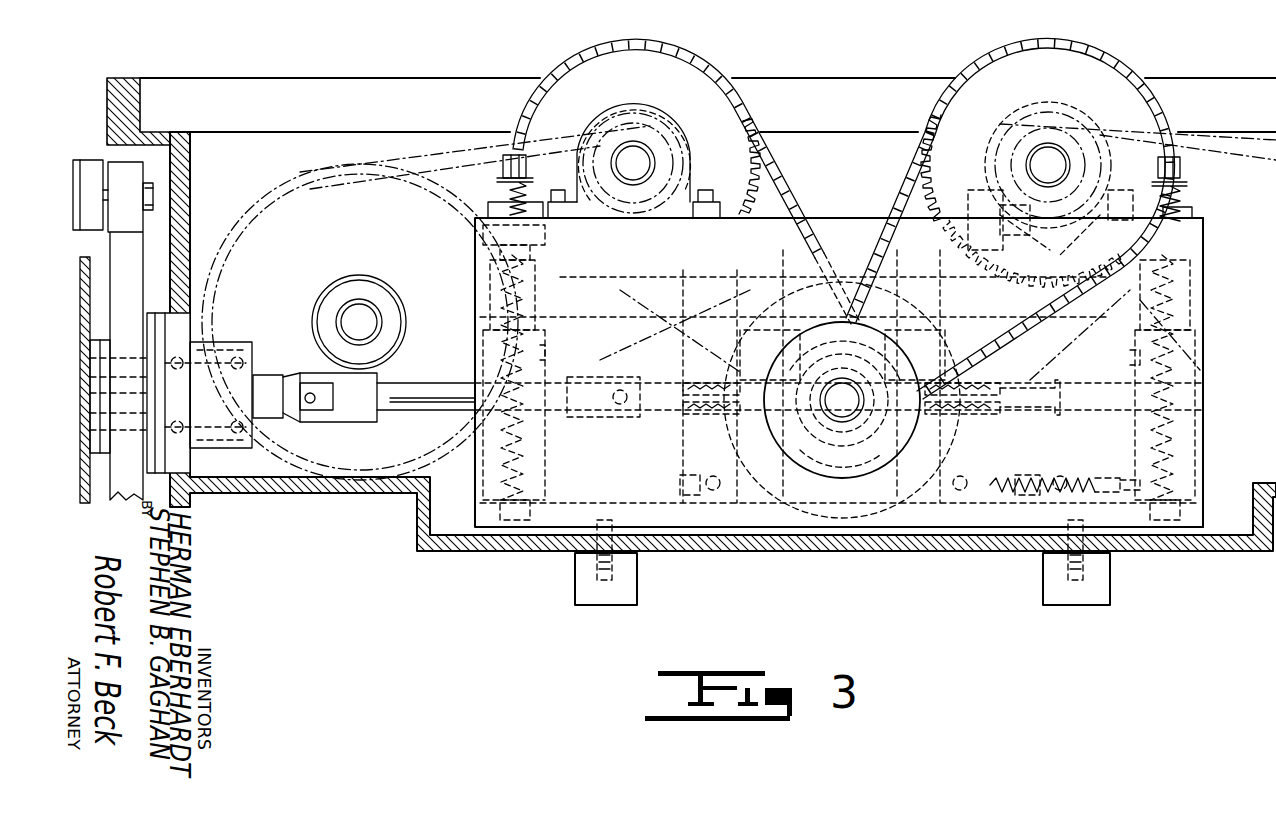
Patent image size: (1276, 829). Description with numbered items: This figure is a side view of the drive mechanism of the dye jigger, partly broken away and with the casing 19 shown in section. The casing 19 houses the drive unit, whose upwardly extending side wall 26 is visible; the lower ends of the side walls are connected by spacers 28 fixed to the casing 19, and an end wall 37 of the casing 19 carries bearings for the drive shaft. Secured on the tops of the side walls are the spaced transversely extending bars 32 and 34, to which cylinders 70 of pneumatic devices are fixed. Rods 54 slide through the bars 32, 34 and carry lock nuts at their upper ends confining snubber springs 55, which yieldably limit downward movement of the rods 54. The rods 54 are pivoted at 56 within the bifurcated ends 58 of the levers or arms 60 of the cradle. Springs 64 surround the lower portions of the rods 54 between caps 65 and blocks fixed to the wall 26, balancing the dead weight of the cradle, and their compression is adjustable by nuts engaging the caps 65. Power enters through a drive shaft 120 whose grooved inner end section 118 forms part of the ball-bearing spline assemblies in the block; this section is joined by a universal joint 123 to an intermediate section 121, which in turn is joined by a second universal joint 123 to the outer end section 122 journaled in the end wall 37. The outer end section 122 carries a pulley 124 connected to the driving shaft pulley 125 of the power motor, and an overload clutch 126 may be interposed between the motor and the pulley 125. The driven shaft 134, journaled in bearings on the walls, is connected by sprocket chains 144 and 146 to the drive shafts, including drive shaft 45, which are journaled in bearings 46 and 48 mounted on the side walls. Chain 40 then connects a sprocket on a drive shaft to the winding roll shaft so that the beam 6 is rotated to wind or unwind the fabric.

The beam 6 is at (368, 308).
The casing 19 is at (955, 562).
The side wall 26 is at (557, 512).
The spacer 28 is at (633, 515).
The transversely extending bar 32 is at (487, 217).
The transversely extending bar 34 is at (1208, 236).
The end wall 37 is at (190, 233).
The chain 40 is at (418, 130).
The drive shaft 45 is at (1047, 150).
The bearing 46 is at (673, 117).
The bearing 48 is at (1080, 110).
The rod 54 is at (507, 152).
The snubber spring 55 is at (522, 190).
The pivot 56 is at (490, 290).
The bifurcated end 58 is at (492, 268).
The lever or arm 60 is at (500, 322).
The spring 64 is at (545, 440).
The cap 65 is at (540, 360).
The cylinder 70 is at (548, 238).
The grooved inner end section 118 is at (1017, 390).
The drive shaft 120 is at (405, 380).
The intermediate section 121 is at (410, 412).
The outer end section 122 is at (112, 378).
The universal joint 123 is at (350, 402).
The pulley 124 is at (120, 475).
The driving shaft pulley 125 is at (152, 195).
The overload clutch 126 is at (92, 160).
The driven shaft 134 is at (847, 415).
The sprocket chain 144 is at (783, 178).
The sprocket chain 146 is at (930, 105).